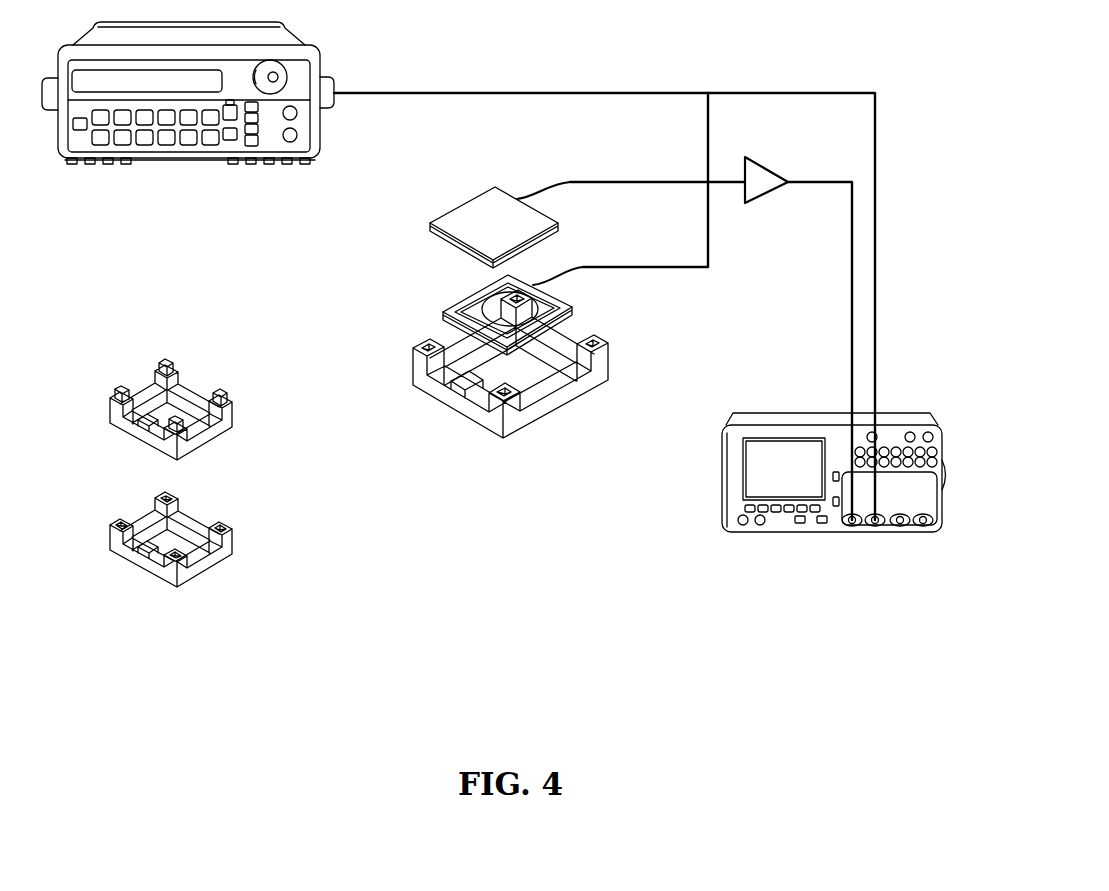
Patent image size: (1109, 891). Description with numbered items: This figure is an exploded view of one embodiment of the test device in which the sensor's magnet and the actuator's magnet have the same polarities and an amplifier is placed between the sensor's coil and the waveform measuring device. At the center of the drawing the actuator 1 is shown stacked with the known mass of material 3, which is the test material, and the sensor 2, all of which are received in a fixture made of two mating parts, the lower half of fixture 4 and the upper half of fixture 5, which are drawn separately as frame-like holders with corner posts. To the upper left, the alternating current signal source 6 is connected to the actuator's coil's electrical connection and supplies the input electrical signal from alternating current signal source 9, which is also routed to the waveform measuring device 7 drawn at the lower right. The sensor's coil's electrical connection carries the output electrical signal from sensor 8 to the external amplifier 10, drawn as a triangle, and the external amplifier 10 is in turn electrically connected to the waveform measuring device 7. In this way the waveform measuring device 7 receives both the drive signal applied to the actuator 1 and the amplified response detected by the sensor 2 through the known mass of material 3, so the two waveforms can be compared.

The actuator 1 is at (490, 302).
The sensor 2 is at (430, 223).
The known mass of material 3 is at (443, 312).
The lower half of fixture 4 is at (507, 437).
The upper half of fixture 5 is at (220, 432).
The alternating current signal source 6 is at (178, 162).
The waveform measuring device 7 is at (733, 527).
The output electrical signal from sensor 8 is at (848, 328).
The input electrical signal from alternating current signal source 9 is at (877, 313).
The external amplifier 10 is at (765, 163).